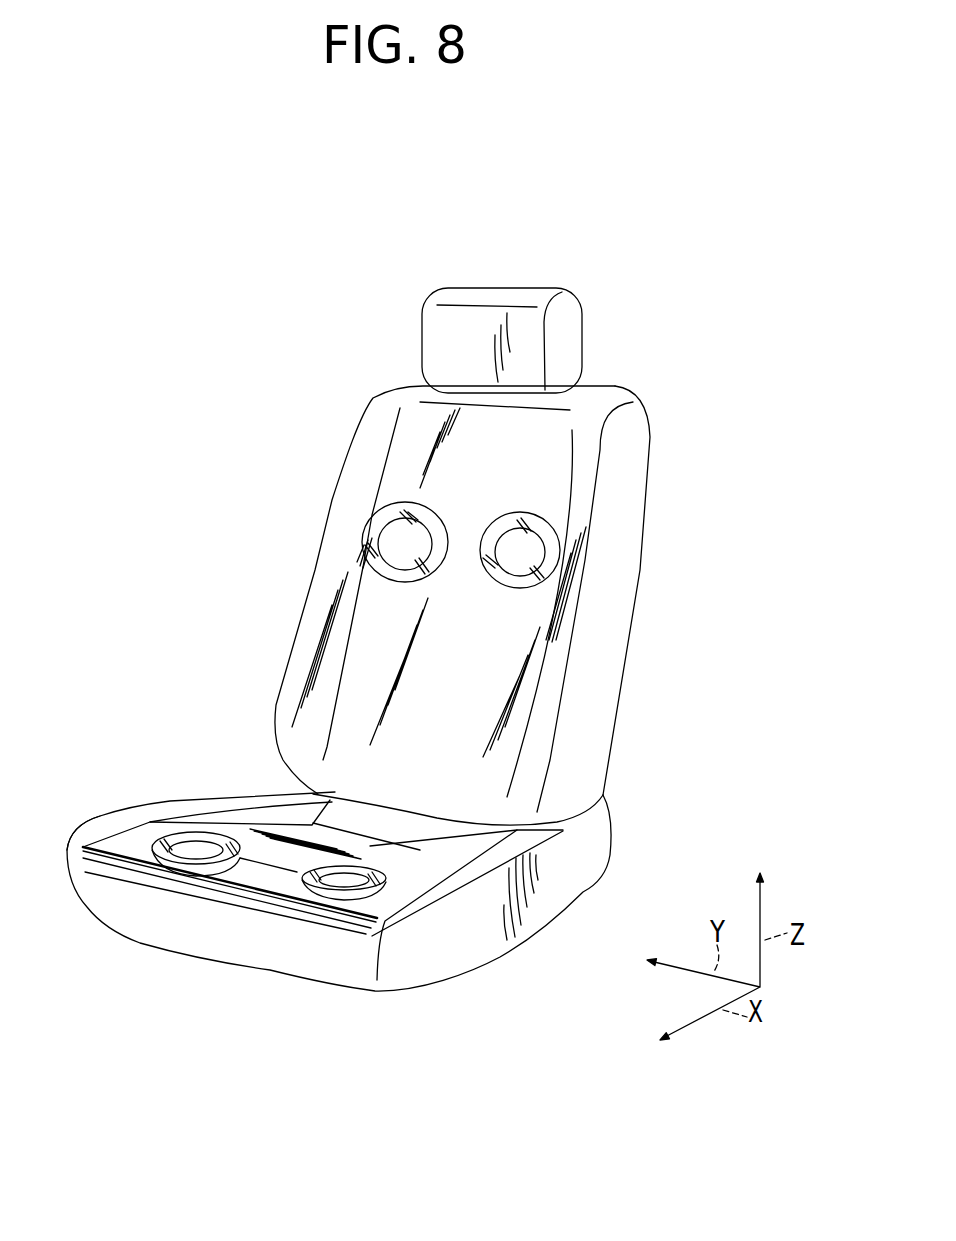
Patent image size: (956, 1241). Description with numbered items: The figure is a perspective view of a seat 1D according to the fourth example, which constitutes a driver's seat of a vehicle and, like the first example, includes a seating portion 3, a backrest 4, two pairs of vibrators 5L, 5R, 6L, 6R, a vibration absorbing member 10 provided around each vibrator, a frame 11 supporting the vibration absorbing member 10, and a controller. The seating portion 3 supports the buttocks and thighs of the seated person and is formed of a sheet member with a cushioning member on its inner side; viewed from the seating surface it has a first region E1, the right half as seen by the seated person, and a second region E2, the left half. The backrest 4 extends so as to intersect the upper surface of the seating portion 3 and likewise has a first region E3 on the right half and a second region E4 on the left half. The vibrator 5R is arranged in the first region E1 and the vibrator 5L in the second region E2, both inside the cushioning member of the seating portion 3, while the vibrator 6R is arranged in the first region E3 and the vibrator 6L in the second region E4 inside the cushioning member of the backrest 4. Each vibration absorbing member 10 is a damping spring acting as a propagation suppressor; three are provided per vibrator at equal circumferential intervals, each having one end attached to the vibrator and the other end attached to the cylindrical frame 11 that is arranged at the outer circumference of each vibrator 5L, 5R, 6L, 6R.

The seat 1D is at (674, 356).
The seating portion 3 is at (477, 923).
The backrest 4 is at (622, 620).
The vibrator (first vibrator) 5R is at (172, 867).
The vibrator (second vibrator) 5L is at (333, 905).
The vibrator (first vibrator) 6R is at (360, 510).
The vibrator (second vibrator) 6L is at (560, 517).
The vibration absorbing member 10 is at (420, 500).
The frame 11 is at (393, 523).
The first region E1 is at (206, 833).
The second region E2 is at (447, 857).
The first region E3 is at (426, 469).
The second region E4 is at (547, 483).